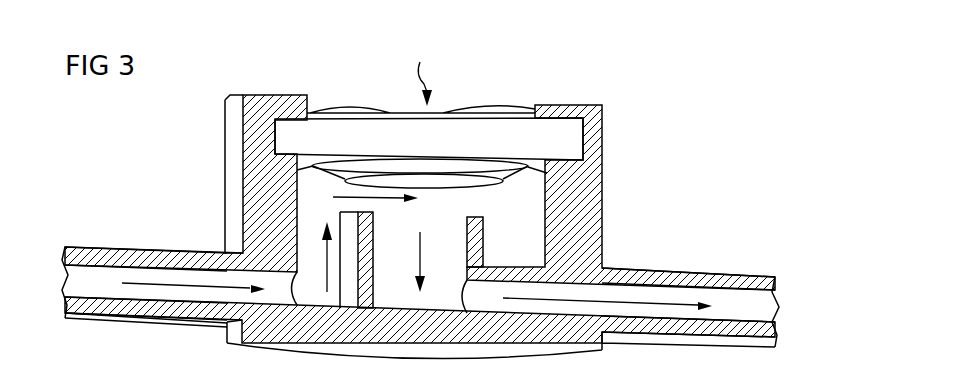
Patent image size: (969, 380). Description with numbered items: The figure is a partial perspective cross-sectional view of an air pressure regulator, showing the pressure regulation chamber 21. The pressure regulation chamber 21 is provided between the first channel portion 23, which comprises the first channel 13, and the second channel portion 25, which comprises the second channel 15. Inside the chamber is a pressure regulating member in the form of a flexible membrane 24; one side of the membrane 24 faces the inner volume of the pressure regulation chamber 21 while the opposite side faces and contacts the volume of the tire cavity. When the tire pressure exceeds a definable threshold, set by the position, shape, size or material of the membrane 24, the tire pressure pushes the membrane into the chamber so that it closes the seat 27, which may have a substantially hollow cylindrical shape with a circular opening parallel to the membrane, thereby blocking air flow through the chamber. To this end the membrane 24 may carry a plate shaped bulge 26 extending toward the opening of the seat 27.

The first channel 13 is at (672, 304).
The second channel 15 is at (150, 285).
The pressure regulation chamber 21 is at (420, 73).
The first channel portion 23 is at (732, 277).
The flexible membrane 24 is at (495, 130).
The second channel portion 25 is at (185, 252).
The plate shaped bulge 26 is at (378, 182).
The seat 27 is at (442, 228).